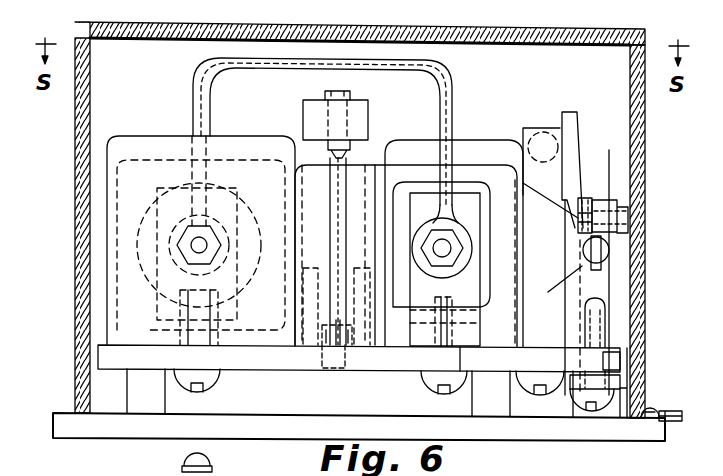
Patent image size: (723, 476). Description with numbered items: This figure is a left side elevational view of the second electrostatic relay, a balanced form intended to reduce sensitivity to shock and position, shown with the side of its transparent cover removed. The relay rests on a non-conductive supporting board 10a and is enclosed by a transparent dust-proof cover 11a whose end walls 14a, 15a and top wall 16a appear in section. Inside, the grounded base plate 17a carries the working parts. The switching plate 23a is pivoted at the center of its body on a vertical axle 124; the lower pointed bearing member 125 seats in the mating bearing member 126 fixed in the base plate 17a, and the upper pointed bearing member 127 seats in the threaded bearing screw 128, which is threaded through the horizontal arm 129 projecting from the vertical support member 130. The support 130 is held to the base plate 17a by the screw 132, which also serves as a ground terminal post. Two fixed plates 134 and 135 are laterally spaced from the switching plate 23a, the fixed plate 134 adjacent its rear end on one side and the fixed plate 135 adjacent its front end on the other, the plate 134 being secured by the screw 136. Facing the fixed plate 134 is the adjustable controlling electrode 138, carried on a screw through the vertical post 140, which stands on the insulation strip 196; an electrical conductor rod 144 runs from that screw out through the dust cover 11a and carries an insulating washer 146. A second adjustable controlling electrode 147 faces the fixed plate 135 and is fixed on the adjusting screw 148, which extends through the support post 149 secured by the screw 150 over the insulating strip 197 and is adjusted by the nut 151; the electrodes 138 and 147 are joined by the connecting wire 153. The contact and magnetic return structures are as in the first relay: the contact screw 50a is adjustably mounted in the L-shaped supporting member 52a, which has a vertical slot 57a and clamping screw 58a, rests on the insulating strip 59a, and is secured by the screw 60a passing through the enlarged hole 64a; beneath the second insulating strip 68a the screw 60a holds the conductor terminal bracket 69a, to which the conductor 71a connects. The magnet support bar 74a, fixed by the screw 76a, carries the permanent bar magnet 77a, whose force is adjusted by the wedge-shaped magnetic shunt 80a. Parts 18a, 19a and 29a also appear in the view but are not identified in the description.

The supporting board 10a is at (112, 439).
The transparent dust-proof cover 11a is at (75, 243).
The end wall 14a is at (75, 157).
The end wall 15a is at (645, 149).
The top wall 16a is at (498, 29).
The base plate 17a is at (258, 365).
The support leg 18a is at (160, 402).
The support leg 19a is at (472, 407).
The switching plate 23a is at (508, 156).
The lever arm 29a is at (572, 228).
The contact screw 50a is at (610, 252).
The L-shaped supporting member 52a is at (609, 286).
The vertical slot 57a is at (592, 204).
The clamping screw 58a is at (628, 218).
The strip of insulating material 59a is at (605, 312).
The screw 60a is at (590, 413).
The enlarged hole 64a is at (621, 355).
The second strip of insulating material 68a is at (628, 380).
The conductor terminal bracket 69a is at (628, 419).
The conductor 71a is at (672, 421).
The magnet support bar 74a is at (578, 170).
The screw 76a is at (516, 377).
The permanent bar magnet 77a is at (542, 126).
The magnetic variable metal shunt 80a is at (578, 120).
The vertical shaft or axle 124 is at (370, 166).
The pointed bearing member 125 is at (348, 340).
The mating bearing member 126 is at (320, 344).
The pointed bearing member 127 is at (346, 146).
The threaded bearing member or screw 128 is at (352, 93).
The horizontal arm 129 is at (303, 117).
The vertical support member 130 is at (362, 334).
The screw 132 is at (336, 258).
The fixed plate 134 is at (165, 145).
The fixed plate 135 is at (466, 138).
The screw 136 is at (214, 385).
The adjustable controlling electrode 138 is at (117, 286).
The vertical post 140 is at (222, 333).
The electrical conductor rod 144 is at (208, 460).
The insulating washer 146 is at (150, 200).
The second adjustable controlling electrode 147 is at (480, 247).
The adjusting screw 148 is at (450, 224).
The support post 149 is at (473, 335).
The screw 150 is at (428, 374).
The nut 151 is at (442, 279).
The connecting wire 153 is at (195, 72).
The strip of insulation material 196 is at (359, 358).
The insulating strip 197 is at (472, 343).